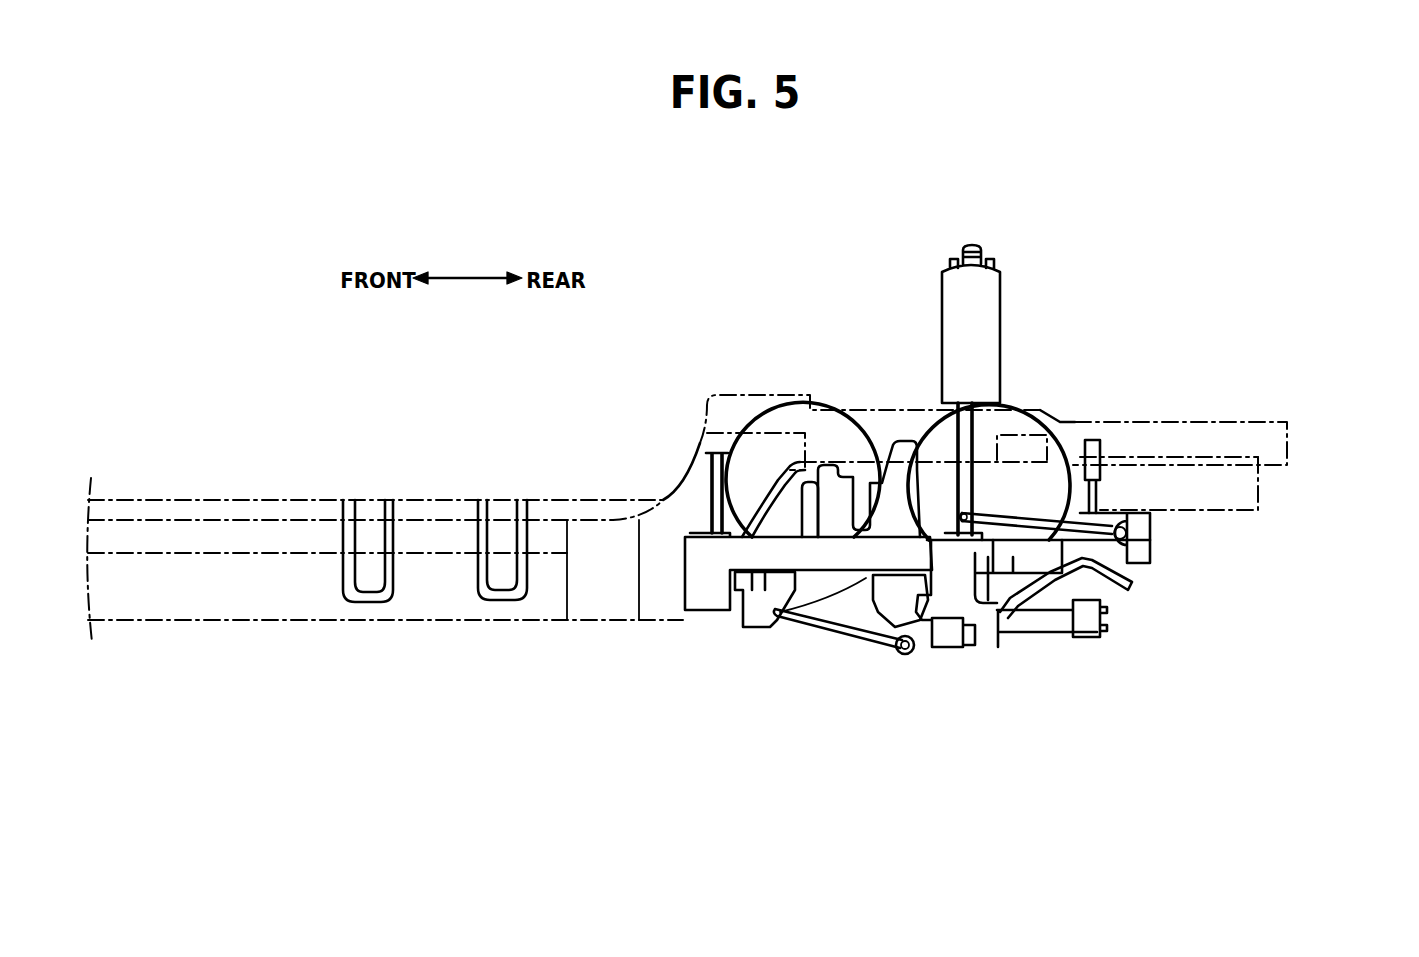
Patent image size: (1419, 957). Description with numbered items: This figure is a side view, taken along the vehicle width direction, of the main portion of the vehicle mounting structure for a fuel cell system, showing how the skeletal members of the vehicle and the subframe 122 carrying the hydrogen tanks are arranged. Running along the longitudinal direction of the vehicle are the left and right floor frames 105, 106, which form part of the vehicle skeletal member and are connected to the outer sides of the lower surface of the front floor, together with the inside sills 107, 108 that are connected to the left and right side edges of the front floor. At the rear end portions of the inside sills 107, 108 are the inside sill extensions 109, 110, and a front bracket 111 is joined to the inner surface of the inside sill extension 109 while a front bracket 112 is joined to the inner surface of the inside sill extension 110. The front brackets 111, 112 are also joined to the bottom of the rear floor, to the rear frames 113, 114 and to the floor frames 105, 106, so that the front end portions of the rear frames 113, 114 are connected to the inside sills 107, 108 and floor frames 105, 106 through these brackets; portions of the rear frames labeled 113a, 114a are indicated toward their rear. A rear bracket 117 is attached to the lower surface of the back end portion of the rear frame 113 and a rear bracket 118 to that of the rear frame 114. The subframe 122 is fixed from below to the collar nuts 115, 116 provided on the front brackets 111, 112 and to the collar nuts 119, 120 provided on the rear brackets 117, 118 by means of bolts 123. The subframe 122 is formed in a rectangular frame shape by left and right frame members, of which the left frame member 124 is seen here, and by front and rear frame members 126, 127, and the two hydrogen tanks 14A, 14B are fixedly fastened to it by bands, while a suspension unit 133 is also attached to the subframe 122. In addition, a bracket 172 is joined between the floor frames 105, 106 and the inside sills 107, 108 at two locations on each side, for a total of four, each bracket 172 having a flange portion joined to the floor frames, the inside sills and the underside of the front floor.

The floor frame 105 is at (563, 518).
The floor frame 106 is at (232, 530).
The inside sill 107 is at (505, 624).
The inside sill 108 is at (535, 600).
The inside sill extension 109 is at (617, 638).
The inside sill extension 110 is at (662, 598).
The front bracket 111 is at (771, 404).
The front bracket 112 is at (700, 530).
The rear frame 113 is at (1184, 375).
The rear frame 114 is at (1213, 422).
The arm lower portion 113a is at (1247, 511).
The arm lower portion 114a is at (1272, 472).
The collar nut 115 is at (657, 448).
The collar nut 116 is at (680, 505).
The rear bracket 117 is at (1200, 568).
The rear bracket 118 is at (1220, 497).
The collar nut 119 is at (1122, 426).
The collar nut 120 is at (1090, 438).
The subframe 122 is at (867, 576).
The bolt 123 is at (745, 440).
The frame member 124 is at (1015, 555).
The frame member 126 is at (712, 592).
The frame member 127 is at (1142, 552).
The suspension unit 133 is at (955, 247).
The hydrogen tank 14A is at (862, 430).
The hydrogen tank 14B is at (1041, 408).
The bracket 172 is at (404, 497).